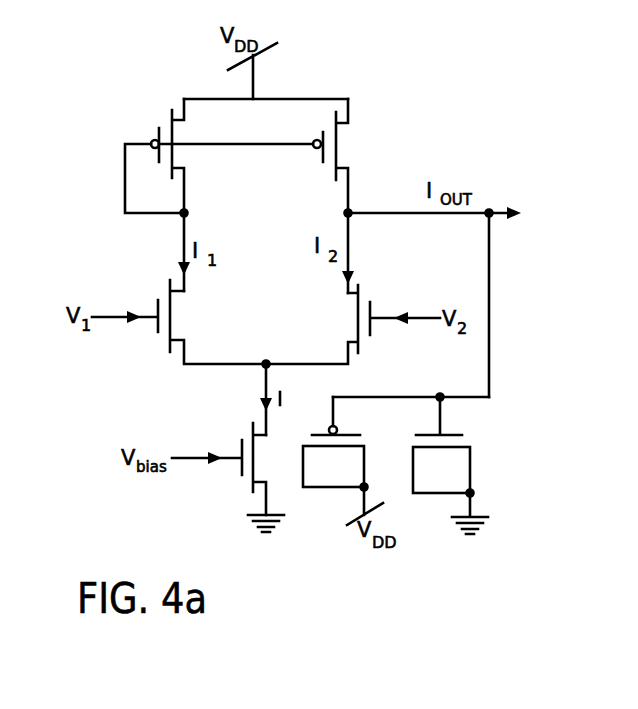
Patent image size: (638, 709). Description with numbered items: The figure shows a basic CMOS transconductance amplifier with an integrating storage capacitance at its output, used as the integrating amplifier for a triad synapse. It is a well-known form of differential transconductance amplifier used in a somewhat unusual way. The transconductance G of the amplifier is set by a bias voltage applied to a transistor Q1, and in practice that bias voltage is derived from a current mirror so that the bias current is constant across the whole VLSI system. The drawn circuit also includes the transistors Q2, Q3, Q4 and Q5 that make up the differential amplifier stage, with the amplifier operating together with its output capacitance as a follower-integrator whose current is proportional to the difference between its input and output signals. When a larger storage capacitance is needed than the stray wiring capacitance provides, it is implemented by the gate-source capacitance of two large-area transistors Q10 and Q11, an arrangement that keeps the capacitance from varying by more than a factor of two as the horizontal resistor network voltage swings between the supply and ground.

The transistor Q1 is at (231, 477).
The differential pair input transistor Q2 is at (179, 322).
The differential pair input transistor Q3 is at (353, 324).
The current mirror transistor Q4 is at (154, 145).
The current mirror transistor Q5 is at (342, 156).
The large-area transistor Q10 is at (343, 461).
The large-area transistor Q11 is at (450, 465).